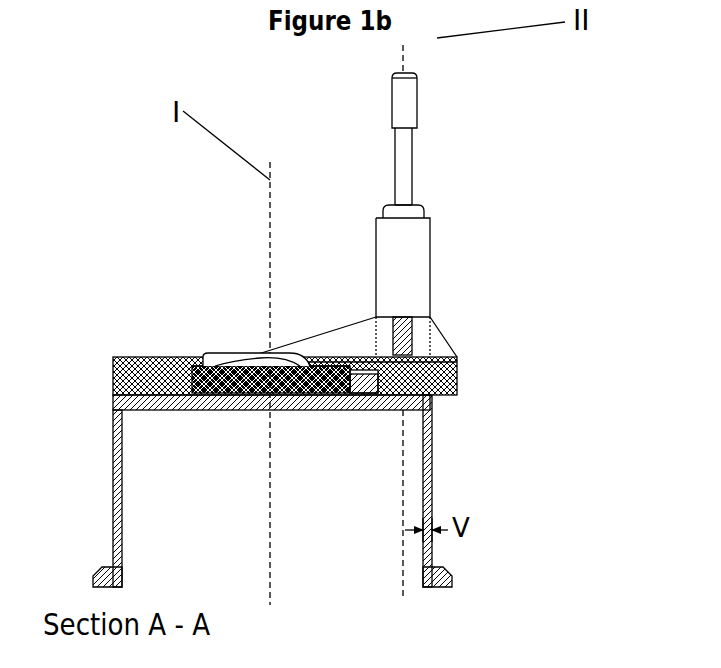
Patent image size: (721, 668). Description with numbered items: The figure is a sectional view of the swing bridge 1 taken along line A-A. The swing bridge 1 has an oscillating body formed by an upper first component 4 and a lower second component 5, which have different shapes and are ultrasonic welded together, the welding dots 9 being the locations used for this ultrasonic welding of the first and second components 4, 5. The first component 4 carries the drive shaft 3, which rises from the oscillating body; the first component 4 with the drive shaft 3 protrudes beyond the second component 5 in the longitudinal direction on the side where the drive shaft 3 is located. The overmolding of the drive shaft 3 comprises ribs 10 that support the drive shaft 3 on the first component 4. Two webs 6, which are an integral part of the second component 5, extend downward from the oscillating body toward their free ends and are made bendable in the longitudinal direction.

The swing bridge 1 is at (122, 160).
The drive shaft 3 is at (405, 144).
The first component 4 is at (458, 382).
The second component 5 is at (410, 398).
The webs 6 is at (113, 503).
The welding dots 9 is at (172, 368).
The ribs 10 is at (445, 342).